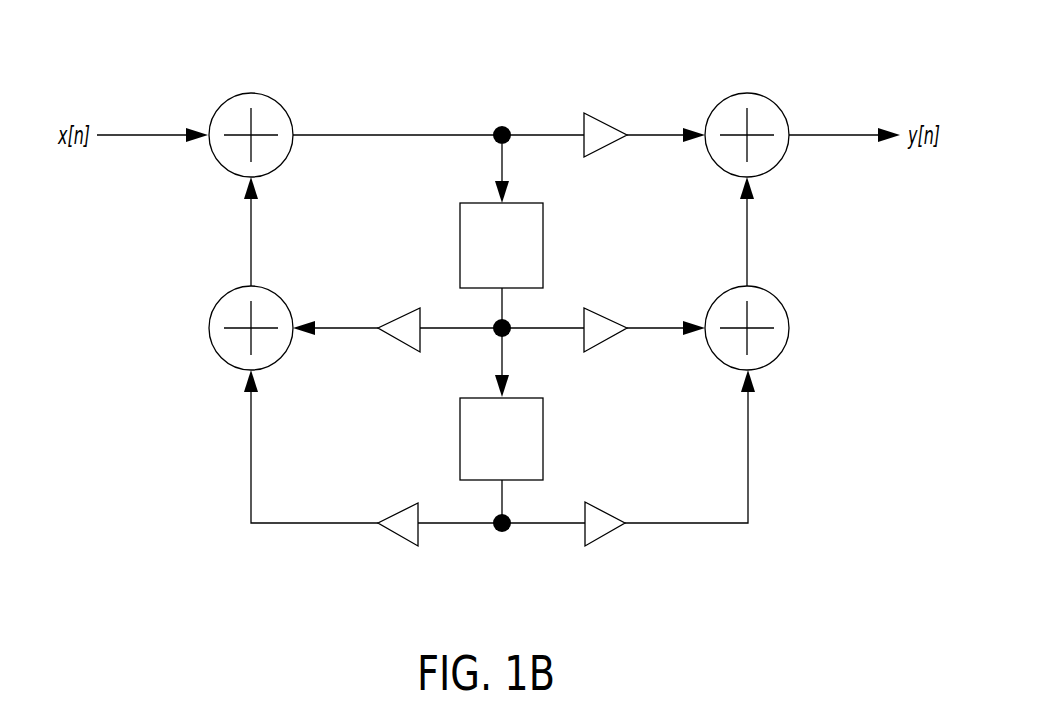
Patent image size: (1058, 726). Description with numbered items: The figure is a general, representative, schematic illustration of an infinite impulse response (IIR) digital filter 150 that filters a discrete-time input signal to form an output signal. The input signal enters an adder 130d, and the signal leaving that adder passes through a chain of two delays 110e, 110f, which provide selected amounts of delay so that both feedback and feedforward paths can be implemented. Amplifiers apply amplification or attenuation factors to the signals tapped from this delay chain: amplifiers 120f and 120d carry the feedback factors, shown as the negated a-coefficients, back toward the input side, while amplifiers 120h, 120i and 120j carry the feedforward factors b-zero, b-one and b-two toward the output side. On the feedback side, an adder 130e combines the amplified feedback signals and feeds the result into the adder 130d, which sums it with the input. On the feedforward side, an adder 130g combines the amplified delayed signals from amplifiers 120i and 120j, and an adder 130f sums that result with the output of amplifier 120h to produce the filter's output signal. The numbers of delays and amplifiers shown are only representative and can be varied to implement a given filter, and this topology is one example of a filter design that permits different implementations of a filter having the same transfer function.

The delay 110e is at (460, 222).
The delay 110f is at (460, 440).
The amplifier 120d is at (410, 540).
The amplifier 120f is at (398, 318).
The amplifier 120h is at (605, 148).
The amplifier 120i is at (605, 341).
The amplifier 120j is at (603, 538).
The adder 130d is at (272, 98).
The adder 130e is at (225, 298).
The adder 130f is at (764, 96).
The adder 130g is at (764, 290).
The IIR digital filter 150 is at (830, 98).